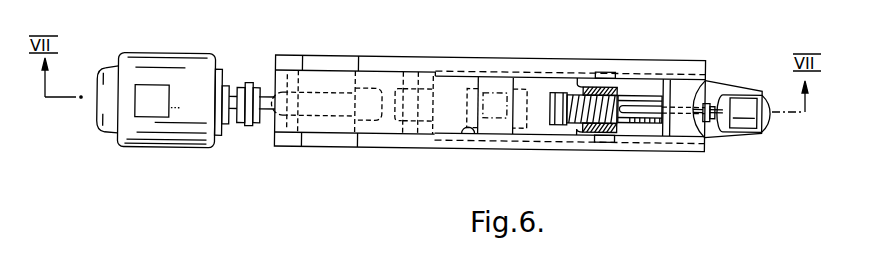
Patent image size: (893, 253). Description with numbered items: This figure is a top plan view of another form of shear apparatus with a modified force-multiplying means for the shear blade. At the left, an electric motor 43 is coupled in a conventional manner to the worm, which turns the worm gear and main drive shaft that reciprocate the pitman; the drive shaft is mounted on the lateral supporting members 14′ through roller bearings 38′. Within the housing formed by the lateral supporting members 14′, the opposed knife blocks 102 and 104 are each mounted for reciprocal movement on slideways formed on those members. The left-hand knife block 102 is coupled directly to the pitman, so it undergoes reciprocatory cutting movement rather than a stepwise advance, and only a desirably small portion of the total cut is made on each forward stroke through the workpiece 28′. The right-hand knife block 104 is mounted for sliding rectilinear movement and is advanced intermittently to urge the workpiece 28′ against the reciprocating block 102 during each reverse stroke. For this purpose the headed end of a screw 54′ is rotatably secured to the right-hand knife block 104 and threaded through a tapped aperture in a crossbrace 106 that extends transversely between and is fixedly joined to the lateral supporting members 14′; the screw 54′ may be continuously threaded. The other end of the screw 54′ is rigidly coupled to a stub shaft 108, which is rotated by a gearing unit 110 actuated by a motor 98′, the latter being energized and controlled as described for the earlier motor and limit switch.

The electric motor 43 is at (182, 144).
The lateral supporting members 14′ is at (466, 57).
The roller bearings 38′ is at (370, 91).
The left-hand knife block 102 is at (450, 83).
The workpiece 28′ is at (502, 92).
The right-hand knife block 104 is at (545, 82).
The crossbrace 106 is at (621, 82).
The screw 54′ is at (622, 126).
The gearing unit 110 is at (712, 82).
The stub shaft 108 is at (708, 139).
The motor 98′ is at (745, 129).